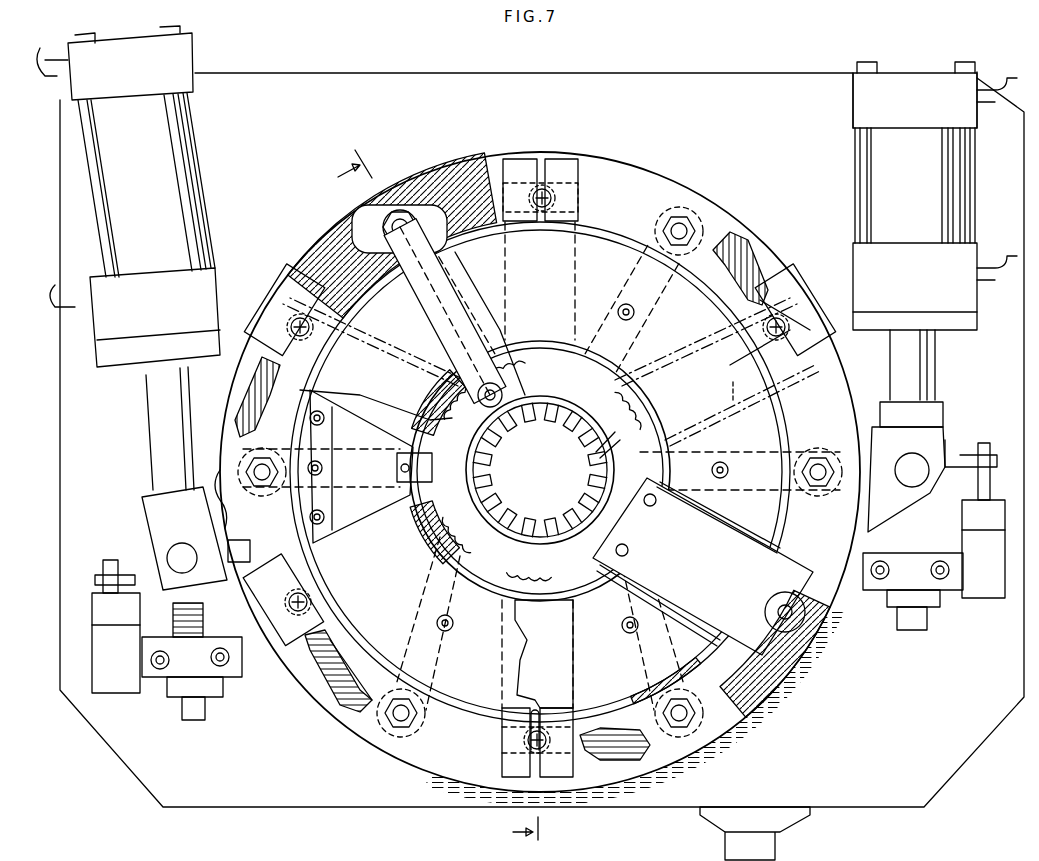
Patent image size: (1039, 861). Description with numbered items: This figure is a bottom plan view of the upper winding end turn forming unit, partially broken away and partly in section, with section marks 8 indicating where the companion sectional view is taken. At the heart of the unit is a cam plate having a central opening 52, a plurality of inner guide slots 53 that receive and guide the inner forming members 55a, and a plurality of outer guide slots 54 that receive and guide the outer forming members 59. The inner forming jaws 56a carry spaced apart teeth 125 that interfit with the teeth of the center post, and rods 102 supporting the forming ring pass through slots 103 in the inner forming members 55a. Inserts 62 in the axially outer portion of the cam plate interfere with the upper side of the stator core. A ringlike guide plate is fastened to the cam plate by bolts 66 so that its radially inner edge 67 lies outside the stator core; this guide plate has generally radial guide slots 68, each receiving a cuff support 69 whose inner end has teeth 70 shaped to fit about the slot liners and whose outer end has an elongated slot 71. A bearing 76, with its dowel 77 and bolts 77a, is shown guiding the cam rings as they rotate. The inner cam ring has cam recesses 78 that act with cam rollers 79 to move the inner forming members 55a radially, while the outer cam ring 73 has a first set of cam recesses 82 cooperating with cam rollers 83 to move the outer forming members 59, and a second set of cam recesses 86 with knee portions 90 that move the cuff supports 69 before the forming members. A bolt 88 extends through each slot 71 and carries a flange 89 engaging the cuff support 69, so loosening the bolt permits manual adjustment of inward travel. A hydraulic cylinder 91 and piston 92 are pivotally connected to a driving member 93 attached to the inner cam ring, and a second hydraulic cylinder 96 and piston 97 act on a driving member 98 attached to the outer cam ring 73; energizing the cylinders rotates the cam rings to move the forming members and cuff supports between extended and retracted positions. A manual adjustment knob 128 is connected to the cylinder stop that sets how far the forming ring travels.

The section line 8 is at (429, 495).
The central opening 52 is at (438, 512).
The inner guide slots 53 is at (470, 318).
The outer guide slots 54 is at (735, 530).
The inner forming members 55a is at (440, 318).
The inner forming jaws 56a is at (492, 338).
The outer forming members 59 is at (690, 610).
The inserts 62 is at (433, 468).
The bolts 66 is at (630, 308).
The radially inner edge 67 is at (432, 402).
The guide slots 68 is at (741, 403).
The cuff supports 69 is at (782, 365).
The teeth 70 is at (600, 455).
The elongated slot 71 is at (802, 322).
The outer cam ring 73 is at (220, 470).
The bearing 76 is at (322, 460).
The dowel 77 is at (322, 470).
The bolts 77a is at (325, 422).
The cam recesses 78 is at (402, 212).
The cam rollers 79 is at (404, 229).
The cam recesses 82 is at (812, 652).
The cam rollers 83 is at (775, 600).
The cam recesses 86 is at (345, 692).
The bolt 88 is at (505, 737).
The flange 89 is at (528, 745).
The knee portions 90 is at (330, 672).
The hydraulic cylinder 91 is at (945, 198).
The piston 92 is at (937, 380).
The driving member 93 is at (915, 442).
The second hydraulic cylinder 96 is at (110, 180).
The piston 97 is at (163, 436).
The driving member 98 is at (170, 545).
The rods 102 is at (445, 393).
The slots 103 is at (483, 385).
The teeth 125 is at (556, 410).
The manual adjustment knob 128 is at (782, 830).